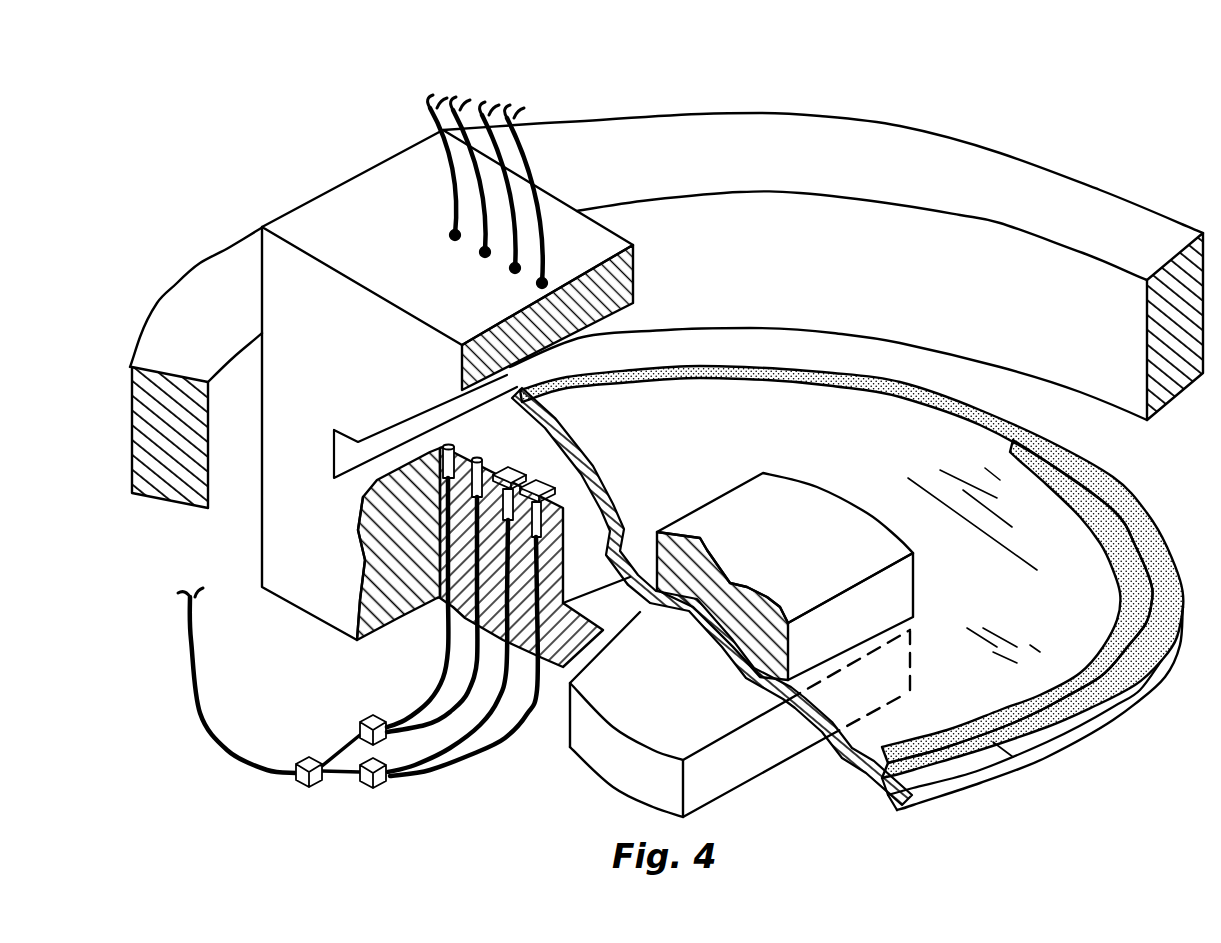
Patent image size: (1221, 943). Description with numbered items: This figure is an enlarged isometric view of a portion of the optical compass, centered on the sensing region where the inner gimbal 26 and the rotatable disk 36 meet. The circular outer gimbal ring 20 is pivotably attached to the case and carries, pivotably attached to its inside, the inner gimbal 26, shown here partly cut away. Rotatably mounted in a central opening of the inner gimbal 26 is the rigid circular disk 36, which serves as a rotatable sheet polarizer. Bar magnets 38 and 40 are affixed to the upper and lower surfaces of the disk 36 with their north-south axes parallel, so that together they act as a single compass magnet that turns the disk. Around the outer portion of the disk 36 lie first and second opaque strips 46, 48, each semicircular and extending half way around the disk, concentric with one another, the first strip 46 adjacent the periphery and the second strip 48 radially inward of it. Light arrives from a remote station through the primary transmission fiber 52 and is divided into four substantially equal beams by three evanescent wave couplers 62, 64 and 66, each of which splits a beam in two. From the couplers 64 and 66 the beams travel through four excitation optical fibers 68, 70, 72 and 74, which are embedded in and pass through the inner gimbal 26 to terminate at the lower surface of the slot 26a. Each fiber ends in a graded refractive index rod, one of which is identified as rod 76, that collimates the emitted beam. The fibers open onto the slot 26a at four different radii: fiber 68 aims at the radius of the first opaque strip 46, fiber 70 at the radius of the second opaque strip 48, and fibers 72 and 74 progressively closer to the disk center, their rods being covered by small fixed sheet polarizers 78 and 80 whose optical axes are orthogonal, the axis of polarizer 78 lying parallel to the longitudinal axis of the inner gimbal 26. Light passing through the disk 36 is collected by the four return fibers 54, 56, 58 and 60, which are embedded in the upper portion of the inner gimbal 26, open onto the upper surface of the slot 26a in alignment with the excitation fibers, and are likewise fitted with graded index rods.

The outer gimbal ring 20 is at (213, 279).
The inner gimbal 26 is at (340, 183).
The slot 26a is at (352, 497).
The circular disk 36 is at (928, 445).
The bar magnet 38 is at (760, 478).
The bar magnet 40 is at (750, 770).
The first opaque strip 46 is at (1110, 482).
The second opaque strip 48 is at (952, 748).
The primary transmission fiber 52 is at (188, 648).
The return fiber 54 is at (450, 190).
The return fiber 56 is at (483, 225).
The return fiber 58 is at (530, 150).
The return fiber 60 is at (547, 190).
The evanescent wave coupler 62 is at (313, 782).
The evanescent wave coupler 64 is at (362, 728).
The evanescent wave coupler 66 is at (387, 783).
The excitation optical fiber 68 is at (447, 652).
The excitation optical fiber 70 is at (470, 678).
The excitation optical fiber 72 is at (443, 750).
The excitation optical fiber 74 is at (490, 737).
The graded refractive index rod 76 is at (427, 452).
The fixed sheet polarizer 78 is at (500, 467).
The fixed sheet polarizer 80 is at (547, 480).